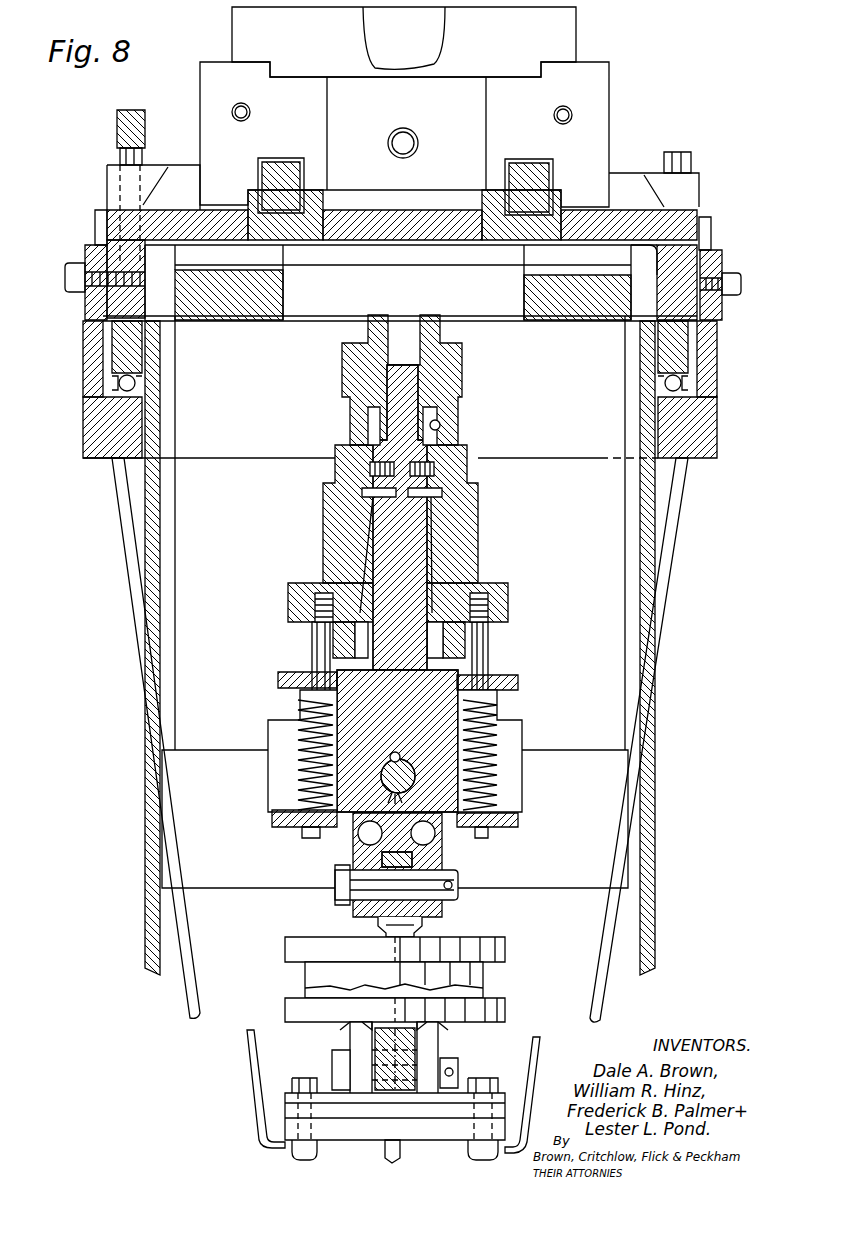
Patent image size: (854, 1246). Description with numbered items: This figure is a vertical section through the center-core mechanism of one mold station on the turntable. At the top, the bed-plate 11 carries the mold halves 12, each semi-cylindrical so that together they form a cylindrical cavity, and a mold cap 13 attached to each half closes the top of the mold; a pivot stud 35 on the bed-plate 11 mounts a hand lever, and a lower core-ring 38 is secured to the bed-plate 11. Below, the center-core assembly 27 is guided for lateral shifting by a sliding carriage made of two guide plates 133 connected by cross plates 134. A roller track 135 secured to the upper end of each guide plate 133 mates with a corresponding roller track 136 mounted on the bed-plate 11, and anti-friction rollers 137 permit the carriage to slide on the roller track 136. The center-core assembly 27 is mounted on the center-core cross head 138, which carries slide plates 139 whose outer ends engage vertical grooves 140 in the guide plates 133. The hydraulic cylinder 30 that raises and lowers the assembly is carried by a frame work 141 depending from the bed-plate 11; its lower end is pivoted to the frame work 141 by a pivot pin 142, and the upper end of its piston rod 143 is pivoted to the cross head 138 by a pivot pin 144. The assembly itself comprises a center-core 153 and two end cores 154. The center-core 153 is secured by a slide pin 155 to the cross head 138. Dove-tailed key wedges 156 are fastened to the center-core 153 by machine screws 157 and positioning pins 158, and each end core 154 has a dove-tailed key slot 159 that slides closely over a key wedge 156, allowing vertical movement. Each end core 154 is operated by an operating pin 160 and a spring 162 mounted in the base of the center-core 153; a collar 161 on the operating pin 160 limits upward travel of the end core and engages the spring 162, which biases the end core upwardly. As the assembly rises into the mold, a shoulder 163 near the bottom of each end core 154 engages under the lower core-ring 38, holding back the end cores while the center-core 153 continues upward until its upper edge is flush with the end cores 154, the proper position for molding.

The bed-plate 11 is at (112, 217).
The mold half 12 is at (597, 107).
The mold cap 13 is at (563, 38).
The center-core assembly 27 is at (290, 498).
The hydraulic cylinder 30 is at (305, 970).
The pivot stud 35 is at (115, 122).
The lower core-ring 38 is at (590, 320).
The guide plate 133 is at (148, 548).
The cross plate 134 is at (490, 322).
The roller track 135 is at (118, 347).
The roller track 136 is at (96, 421).
The anti-friction roller 137 is at (112, 385).
The center-core cross head 138 is at (443, 908).
The slide plate 139 is at (182, 768).
The vertical groove 140 is at (173, 693).
The frame work 141 is at (122, 497).
The pivot pin 142 is at (340, 1066).
The piston rod 143 is at (380, 930).
The pivot pin 144 is at (335, 892).
The center-core 153 is at (408, 385).
The end core 154 is at (325, 531).
The slide pin 155 is at (417, 774).
The dove-tailed key wedge 156 is at (430, 558).
The machine screw 157 is at (434, 452).
The positioning pin 158 is at (442, 489).
The dove-tailed key slot 159 is at (441, 424).
The operating pin 160 is at (486, 651).
The collar 161 is at (495, 697).
The spring 162 is at (490, 712).
The shoulder 163 is at (505, 587).